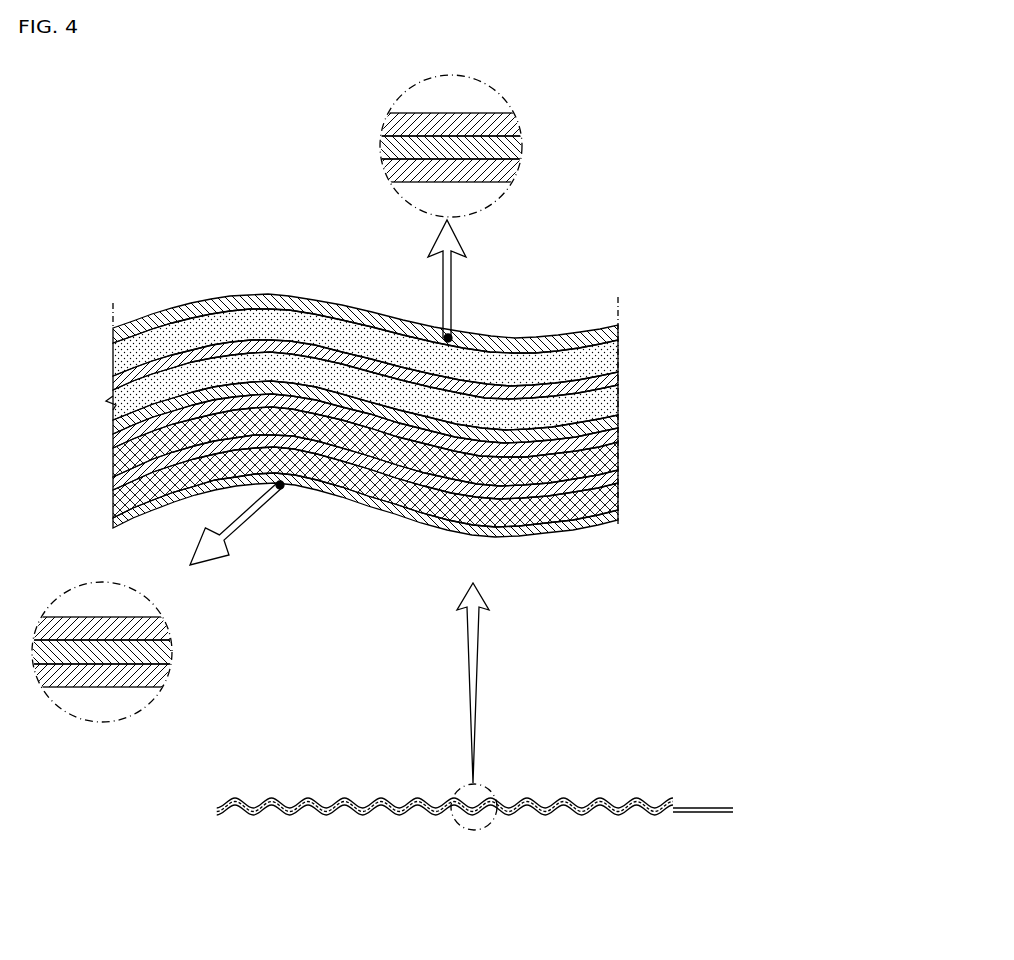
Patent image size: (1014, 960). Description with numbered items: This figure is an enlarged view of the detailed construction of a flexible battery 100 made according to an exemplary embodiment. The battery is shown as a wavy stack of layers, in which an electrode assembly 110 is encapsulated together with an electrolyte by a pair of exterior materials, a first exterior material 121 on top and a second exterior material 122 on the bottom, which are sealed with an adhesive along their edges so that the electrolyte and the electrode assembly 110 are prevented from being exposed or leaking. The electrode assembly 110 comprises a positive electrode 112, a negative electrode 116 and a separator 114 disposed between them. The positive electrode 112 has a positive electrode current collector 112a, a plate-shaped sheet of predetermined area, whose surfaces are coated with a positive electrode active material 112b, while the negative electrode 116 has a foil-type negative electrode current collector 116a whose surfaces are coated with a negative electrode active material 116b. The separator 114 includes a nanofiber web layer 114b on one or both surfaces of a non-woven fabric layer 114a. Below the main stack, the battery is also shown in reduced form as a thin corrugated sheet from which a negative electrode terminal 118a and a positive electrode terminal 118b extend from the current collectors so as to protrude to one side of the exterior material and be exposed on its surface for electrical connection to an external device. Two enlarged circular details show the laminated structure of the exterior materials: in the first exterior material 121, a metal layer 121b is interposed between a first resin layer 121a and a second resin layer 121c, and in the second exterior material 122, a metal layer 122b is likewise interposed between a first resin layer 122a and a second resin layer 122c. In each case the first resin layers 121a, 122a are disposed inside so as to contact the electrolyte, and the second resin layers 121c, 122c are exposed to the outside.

The flexible battery 100 is at (278, 275).
The electrode assembly 110 is at (463, 423).
The positive electrode 112 is at (445, 472).
The positive electrode current collector 112a is at (620, 478).
The positive electrode active material 112b is at (620, 455).
The separator 114 is at (435, 419).
The non-woven fabric layer 114a is at (622, 421).
The nanofiber web layer 114b is at (622, 434).
The negative electrode 116 is at (445, 369).
The negative electrode current collector 116a is at (622, 378).
The negative electrode active material 116b is at (622, 354).
The negative electrode terminal 118a is at (708, 807).
The positive electrode terminal 118b is at (713, 813).
The first exterior material 121 is at (404, 437).
The first resin layer 121a is at (515, 172).
The metal layer 121b is at (518, 147).
The second resin layer 121c is at (515, 122).
The second exterior material 122 is at (365, 687).
The first resin layer 122a is at (166, 620).
The metal layer 122b is at (172, 648).
The second resin layer 122c is at (166, 677).